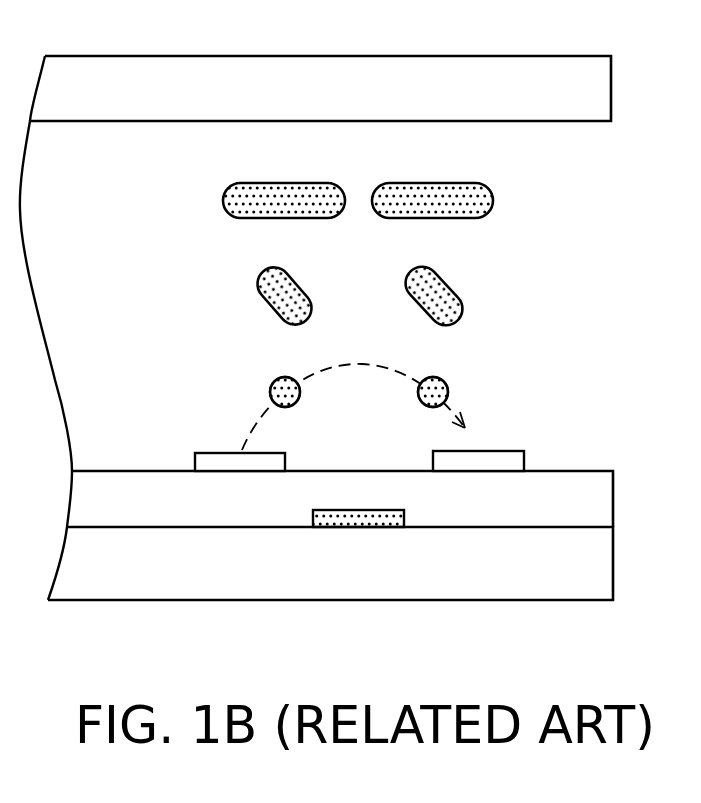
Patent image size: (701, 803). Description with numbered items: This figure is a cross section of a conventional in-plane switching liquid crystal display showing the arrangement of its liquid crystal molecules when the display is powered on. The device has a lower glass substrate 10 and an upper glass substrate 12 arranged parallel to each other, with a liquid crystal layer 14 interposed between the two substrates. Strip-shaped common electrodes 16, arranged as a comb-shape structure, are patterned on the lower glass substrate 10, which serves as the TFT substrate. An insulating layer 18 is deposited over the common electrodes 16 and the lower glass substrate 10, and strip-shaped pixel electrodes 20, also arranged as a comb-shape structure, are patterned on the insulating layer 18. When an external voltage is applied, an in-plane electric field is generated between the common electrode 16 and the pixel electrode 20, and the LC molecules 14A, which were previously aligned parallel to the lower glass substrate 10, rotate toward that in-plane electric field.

The lower glass substrate 10 is at (602, 565).
The upper glass substrate 12 is at (600, 84).
The liquid crystal layer 14 is at (412, 316).
The LC molecules 14A is at (270, 297).
The common electrode 16 is at (363, 527).
The insulating layer 18 is at (602, 503).
The pixel electrode 20 is at (517, 460).